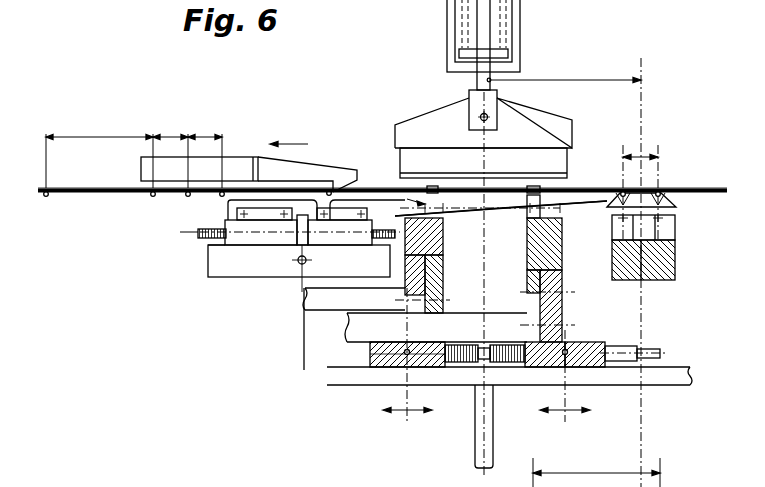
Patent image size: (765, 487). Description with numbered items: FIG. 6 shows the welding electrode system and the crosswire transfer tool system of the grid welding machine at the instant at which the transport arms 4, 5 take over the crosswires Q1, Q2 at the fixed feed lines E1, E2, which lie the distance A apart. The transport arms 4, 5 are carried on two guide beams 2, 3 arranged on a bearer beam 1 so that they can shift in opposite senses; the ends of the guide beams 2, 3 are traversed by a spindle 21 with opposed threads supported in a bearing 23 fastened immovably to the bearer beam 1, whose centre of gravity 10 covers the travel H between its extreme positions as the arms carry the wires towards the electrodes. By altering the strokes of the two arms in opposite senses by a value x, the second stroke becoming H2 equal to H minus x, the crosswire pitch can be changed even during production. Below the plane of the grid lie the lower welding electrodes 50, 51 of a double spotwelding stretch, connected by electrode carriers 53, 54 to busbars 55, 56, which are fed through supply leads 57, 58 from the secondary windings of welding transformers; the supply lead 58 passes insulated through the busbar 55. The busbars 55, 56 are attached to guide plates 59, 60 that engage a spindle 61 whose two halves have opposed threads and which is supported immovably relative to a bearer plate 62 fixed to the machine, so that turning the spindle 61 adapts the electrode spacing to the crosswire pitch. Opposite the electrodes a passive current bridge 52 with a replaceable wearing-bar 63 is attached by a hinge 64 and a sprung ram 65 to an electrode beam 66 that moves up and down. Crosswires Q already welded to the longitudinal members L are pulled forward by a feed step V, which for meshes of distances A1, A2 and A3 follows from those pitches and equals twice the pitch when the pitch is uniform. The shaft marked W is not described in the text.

The bearer beam 1 is at (323, 265).
The guide beam 2 is at (210, 252).
The guide beam 3 is at (320, 236).
The centre of gravity 10 is at (320, 278).
The spindle 21 is at (200, 238).
The bearing 23 is at (287, 236).
The transport arm 4 is at (462, 212).
The transport arm 5 is at (537, 221).
The welding electrode 50 is at (393, 186).
The welding electrode 51 is at (562, 244).
The passive current bridge 52 is at (476, 170).
The electrode carrier 53 is at (443, 247).
The electrode carrier 54 is at (527, 246).
The busbar 55 is at (443, 287).
The busbar 56 is at (540, 292).
The supply lead 57 is at (358, 308).
The supply lead 58 is at (470, 334).
The guide plate 59 is at (378, 368).
The guide plate 60 is at (600, 368).
The spindle 61 is at (462, 365).
The bearer plate 62 is at (668, 376).
The wearing-bar 63 is at (524, 178).
The hinge 64 is at (497, 121).
The sprung ram 65 is at (477, 80).
The electrode beam 66 is at (521, 42).
The distance between feed lines A is at (625, 185).
The crosswire distance A1 is at (134, 152).
The crosswire distance A2 is at (167, 126).
The crosswire distance A3 is at (204, 126).
The feed line E1 is at (634, 187).
The feed line E2 is at (664, 143).
The distance apart of planes of symmetry H is at (564, 72).
The length of stroke H2 is at (596, 472).
The longitudinal member L is at (587, 187).
The crosswire Q is at (328, 190).
The crosswire Q1 is at (613, 205).
The crosswire Q2 is at (674, 196).
The feed step V is at (289, 133).
The shaft W is at (478, 430).